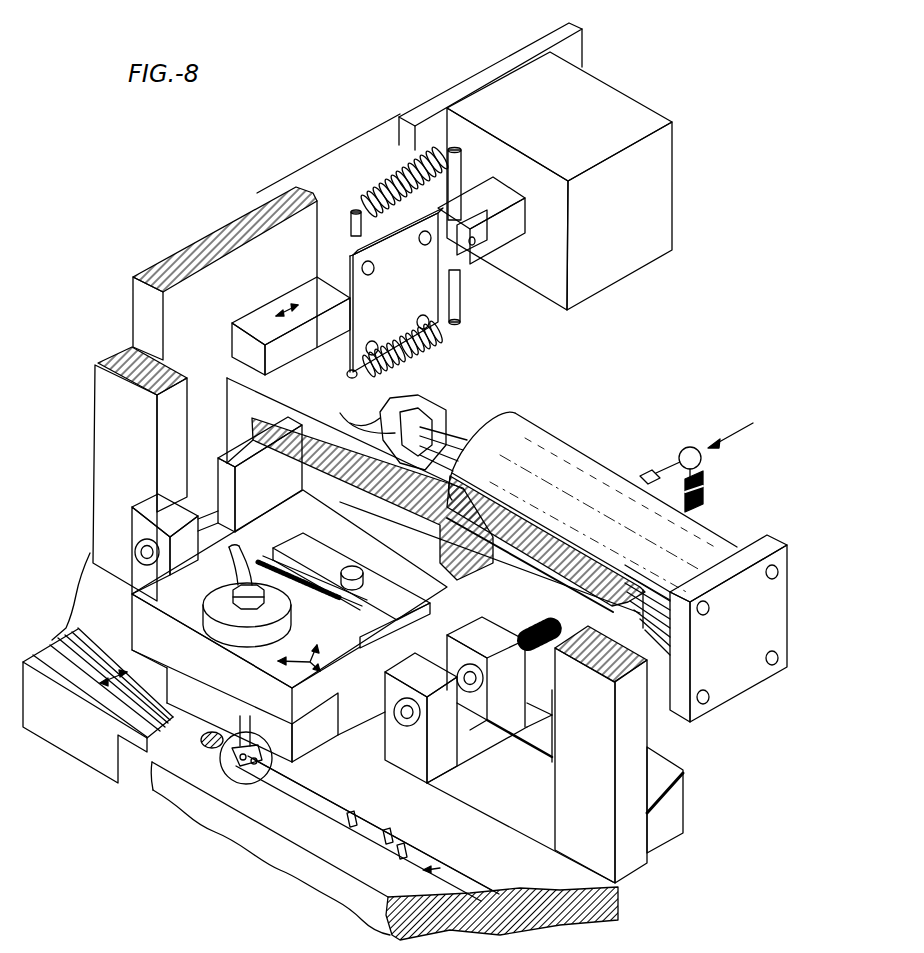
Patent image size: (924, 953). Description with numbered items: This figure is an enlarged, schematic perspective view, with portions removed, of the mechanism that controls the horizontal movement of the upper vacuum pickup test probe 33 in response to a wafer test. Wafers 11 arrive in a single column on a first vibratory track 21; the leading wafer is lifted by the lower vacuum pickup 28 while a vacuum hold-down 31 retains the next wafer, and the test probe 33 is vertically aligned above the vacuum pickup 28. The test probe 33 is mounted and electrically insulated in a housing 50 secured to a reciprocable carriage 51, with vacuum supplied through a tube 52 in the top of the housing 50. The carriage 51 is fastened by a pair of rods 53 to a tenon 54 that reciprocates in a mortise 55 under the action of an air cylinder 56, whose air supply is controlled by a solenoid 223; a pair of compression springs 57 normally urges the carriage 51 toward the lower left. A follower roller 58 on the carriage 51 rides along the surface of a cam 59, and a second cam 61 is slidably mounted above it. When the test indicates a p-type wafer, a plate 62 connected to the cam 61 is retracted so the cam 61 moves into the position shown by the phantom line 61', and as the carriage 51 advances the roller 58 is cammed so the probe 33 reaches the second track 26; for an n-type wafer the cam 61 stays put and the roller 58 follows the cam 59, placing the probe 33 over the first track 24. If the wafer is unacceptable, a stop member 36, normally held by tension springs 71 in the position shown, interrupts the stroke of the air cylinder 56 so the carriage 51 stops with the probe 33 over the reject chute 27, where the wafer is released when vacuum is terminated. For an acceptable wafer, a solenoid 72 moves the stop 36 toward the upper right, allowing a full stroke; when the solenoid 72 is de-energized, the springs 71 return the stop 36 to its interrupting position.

The wafers 11 is at (355, 818).
The first vibratory track 21 is at (312, 870).
The solenoid 223 is at (703, 500).
The first track 24 is at (128, 703).
The second track 26 is at (88, 646).
The reject chute 27 is at (212, 748).
The vacuum pickup 28 is at (242, 762).
The vacuum hold-down 31 is at (256, 767).
The vacuum pickup test probe 33 is at (242, 743).
The stop member 36 is at (275, 300).
The housing 50 is at (338, 694).
The carriage 51 is at (380, 745).
The tube 52 is at (240, 578).
The rods 53 is at (205, 521).
The tenon 54 is at (232, 397).
The mortise 55 is at (627, 615).
The air cylinder 56 is at (590, 500).
The compression springs 57 is at (532, 622).
The follower roller 58 is at (364, 577).
The cam 59 is at (373, 616).
The cam 61 is at (312, 570).
The phantom line position of cam 61' is at (299, 562).
The plate 62 is at (305, 651).
The tension springs 71 is at (396, 173).
The solenoid 72 is at (673, 186).